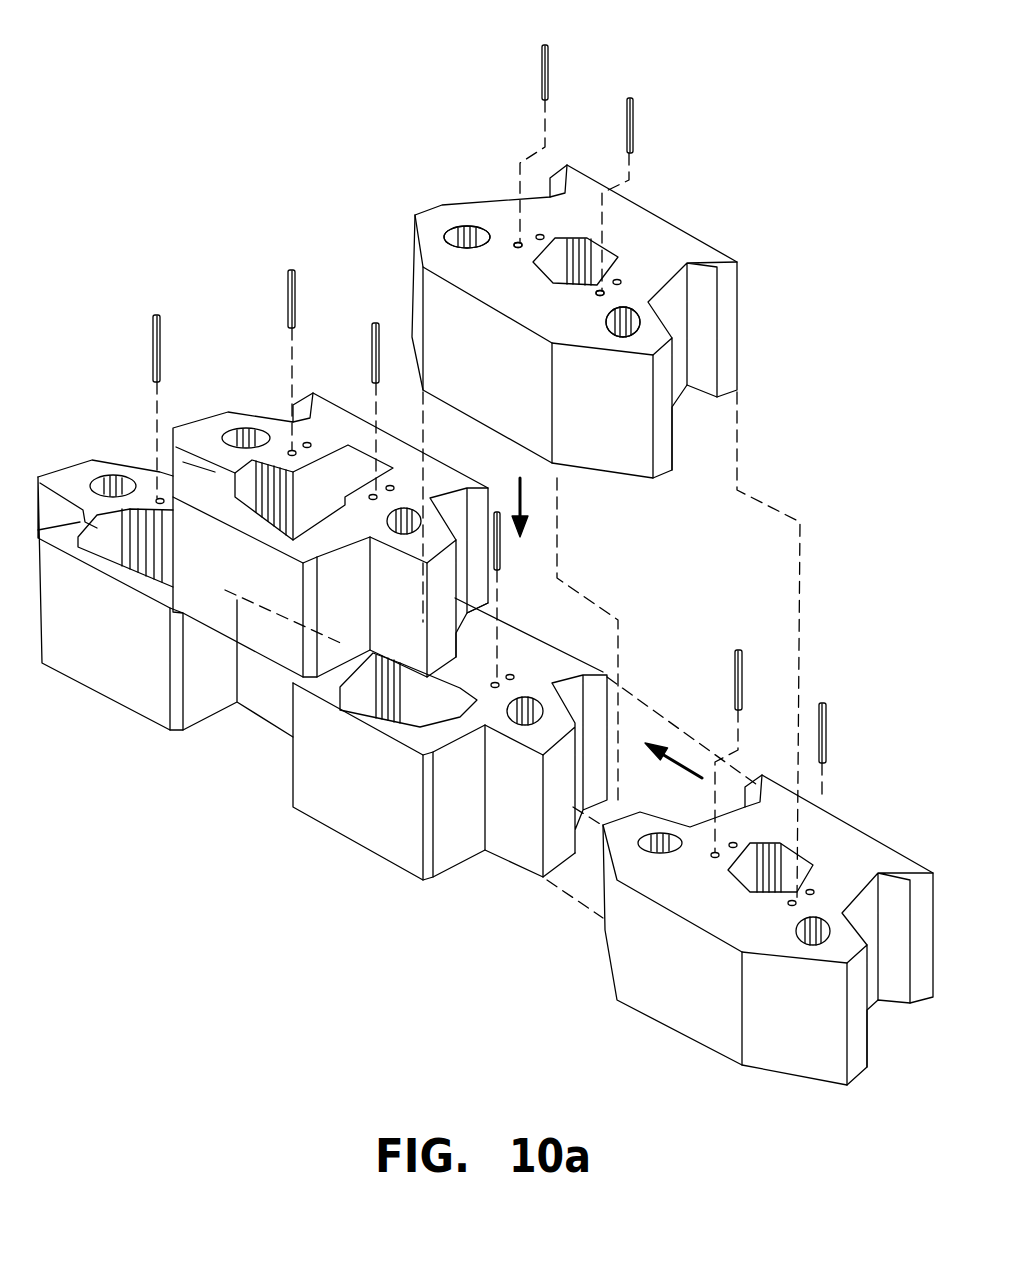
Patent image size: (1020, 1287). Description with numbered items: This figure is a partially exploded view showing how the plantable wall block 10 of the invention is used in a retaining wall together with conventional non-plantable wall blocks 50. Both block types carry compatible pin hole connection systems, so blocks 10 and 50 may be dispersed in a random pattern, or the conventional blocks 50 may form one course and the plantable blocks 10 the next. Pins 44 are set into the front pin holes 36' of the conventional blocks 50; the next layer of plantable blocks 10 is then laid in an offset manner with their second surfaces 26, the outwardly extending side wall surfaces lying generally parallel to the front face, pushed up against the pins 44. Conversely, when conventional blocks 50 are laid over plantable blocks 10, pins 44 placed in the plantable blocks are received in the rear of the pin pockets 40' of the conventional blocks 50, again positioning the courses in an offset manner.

The plantable wall block 10 is at (322, 578).
The second surface 26 is at (524, 848).
The pin 44 is at (543, 85).
The conventional wall block 50 is at (662, 213).
The front pin hole 36' is at (612, 211).
The pin pocket 40' is at (572, 252).